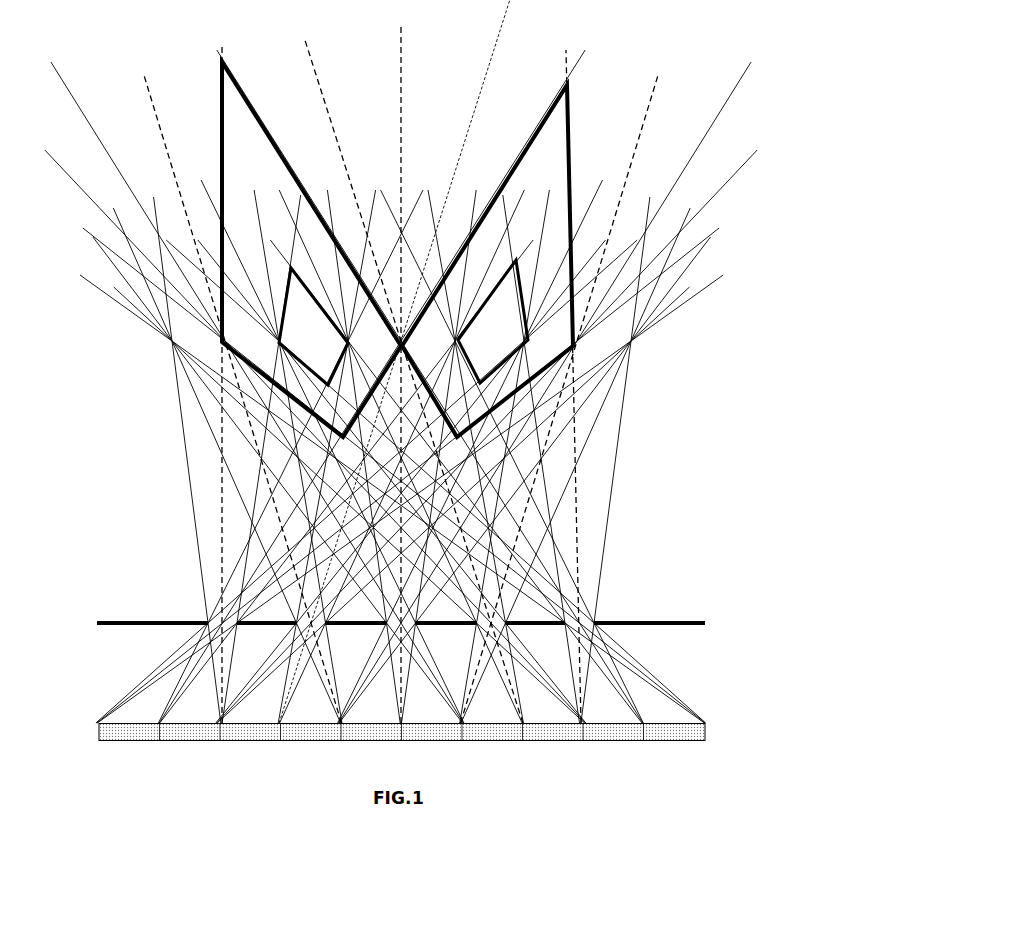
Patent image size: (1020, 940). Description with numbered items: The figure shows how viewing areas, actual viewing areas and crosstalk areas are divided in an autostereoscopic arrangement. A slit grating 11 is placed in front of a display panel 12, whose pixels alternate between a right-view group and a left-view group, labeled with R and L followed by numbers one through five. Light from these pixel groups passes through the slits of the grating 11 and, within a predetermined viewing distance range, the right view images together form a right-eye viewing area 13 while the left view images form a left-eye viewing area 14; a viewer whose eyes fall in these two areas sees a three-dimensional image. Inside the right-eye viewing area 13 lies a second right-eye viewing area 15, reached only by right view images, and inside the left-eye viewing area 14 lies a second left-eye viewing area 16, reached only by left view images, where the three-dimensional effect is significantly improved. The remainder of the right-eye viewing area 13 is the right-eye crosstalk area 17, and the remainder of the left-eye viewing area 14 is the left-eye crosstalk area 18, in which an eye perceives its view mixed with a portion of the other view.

The slit grating 11 is at (705, 622).
The display panel 12 is at (705, 722).
The right-eye viewing area 13 is at (246, 99).
The left-eye viewing area 14 is at (573, 118).
The second right-eye viewing area 15 is at (313, 326).
The second left-eye viewing area 16 is at (493, 321).
The right-eye crosstalk area 17 is at (394, 361).
The left-eye crosstalk area 18 is at (413, 380).